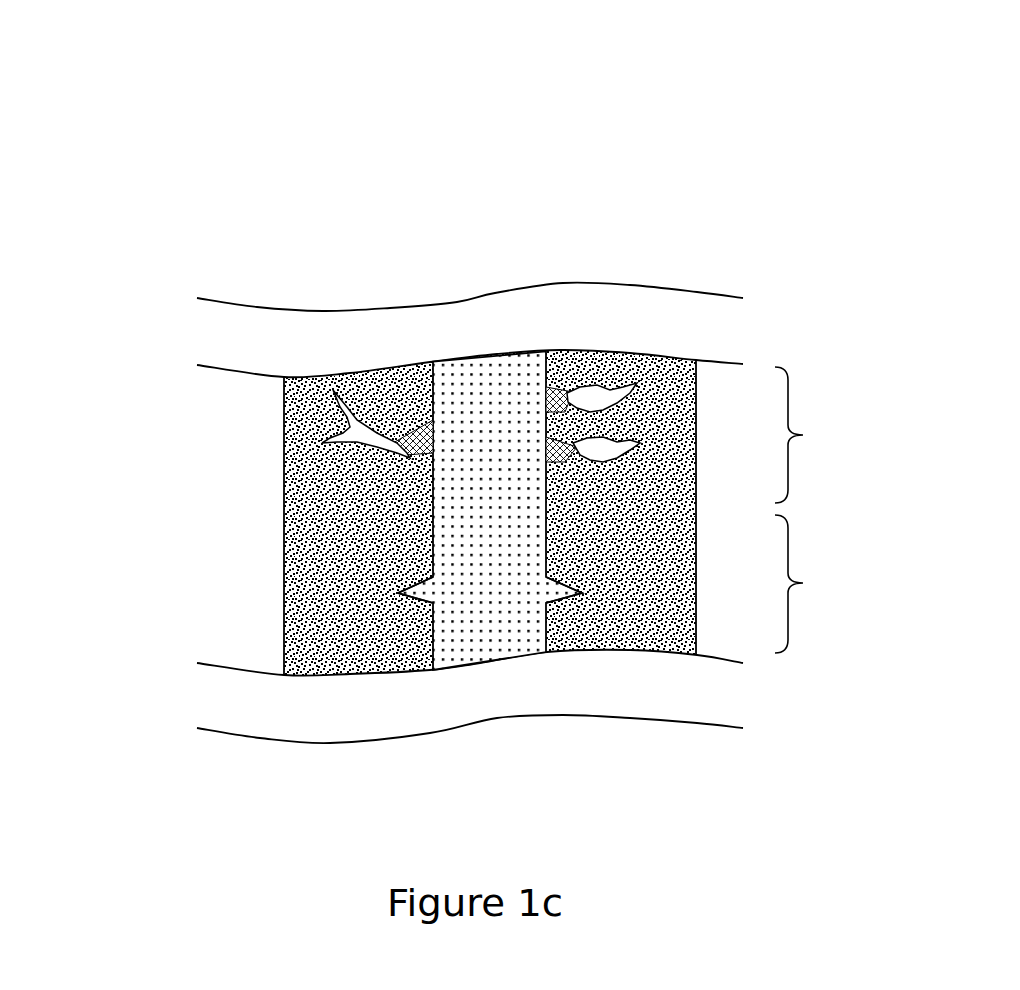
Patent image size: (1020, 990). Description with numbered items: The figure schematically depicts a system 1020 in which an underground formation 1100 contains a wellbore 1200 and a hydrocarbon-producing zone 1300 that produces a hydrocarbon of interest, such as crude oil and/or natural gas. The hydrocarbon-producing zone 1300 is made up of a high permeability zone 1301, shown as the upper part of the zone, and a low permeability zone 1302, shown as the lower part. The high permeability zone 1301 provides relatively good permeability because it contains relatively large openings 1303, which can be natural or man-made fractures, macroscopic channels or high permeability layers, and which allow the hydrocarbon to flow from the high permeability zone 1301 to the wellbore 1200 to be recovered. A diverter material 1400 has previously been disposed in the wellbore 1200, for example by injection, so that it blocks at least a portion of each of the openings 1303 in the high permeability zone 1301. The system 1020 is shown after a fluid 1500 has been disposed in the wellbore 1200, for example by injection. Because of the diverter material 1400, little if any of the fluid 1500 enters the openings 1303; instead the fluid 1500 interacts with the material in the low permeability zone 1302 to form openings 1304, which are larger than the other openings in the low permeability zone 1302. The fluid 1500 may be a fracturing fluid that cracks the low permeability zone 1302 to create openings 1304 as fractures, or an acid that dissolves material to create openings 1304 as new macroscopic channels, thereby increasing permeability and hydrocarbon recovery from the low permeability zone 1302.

The system 1020 is at (753, 98).
The underground formation 1100 is at (182, 413).
The wellbore 1200 is at (467, 522).
The hydrocarbon-producing zone 1300 is at (287, 538).
The high permeability zone 1301 is at (577, 432).
The low permeability zone 1302 is at (577, 587).
The openings 1303 is at (368, 432).
The openings 1304 is at (397, 593).
The diverter material 1400 is at (556, 448).
The fluid 1500 is at (467, 633).